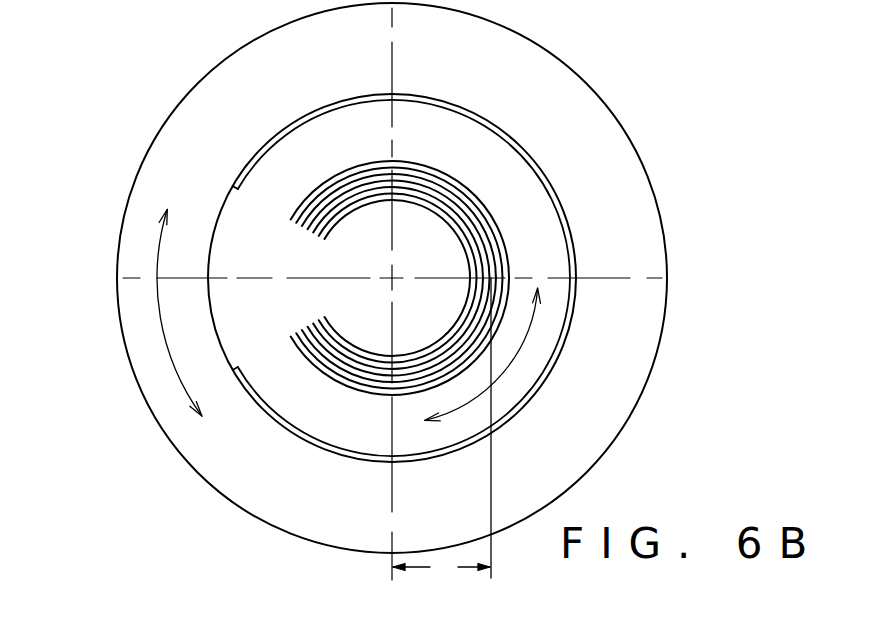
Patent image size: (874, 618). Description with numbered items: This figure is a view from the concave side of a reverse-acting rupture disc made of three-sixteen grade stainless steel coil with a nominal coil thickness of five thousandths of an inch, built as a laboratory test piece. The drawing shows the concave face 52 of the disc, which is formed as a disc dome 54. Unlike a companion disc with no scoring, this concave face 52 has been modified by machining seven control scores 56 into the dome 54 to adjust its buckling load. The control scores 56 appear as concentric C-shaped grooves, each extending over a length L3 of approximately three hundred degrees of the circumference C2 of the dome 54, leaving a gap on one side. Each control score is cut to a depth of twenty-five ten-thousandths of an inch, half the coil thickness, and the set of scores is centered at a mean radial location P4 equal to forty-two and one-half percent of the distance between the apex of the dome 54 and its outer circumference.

The concave face 52 is at (343, 135).
The disc dome 54 is at (518, 190).
The control scores 56 is at (406, 404).
The circumference C2 is at (167, 333).
The length L3 is at (523, 338).
The mean radial location P4 is at (442, 431).